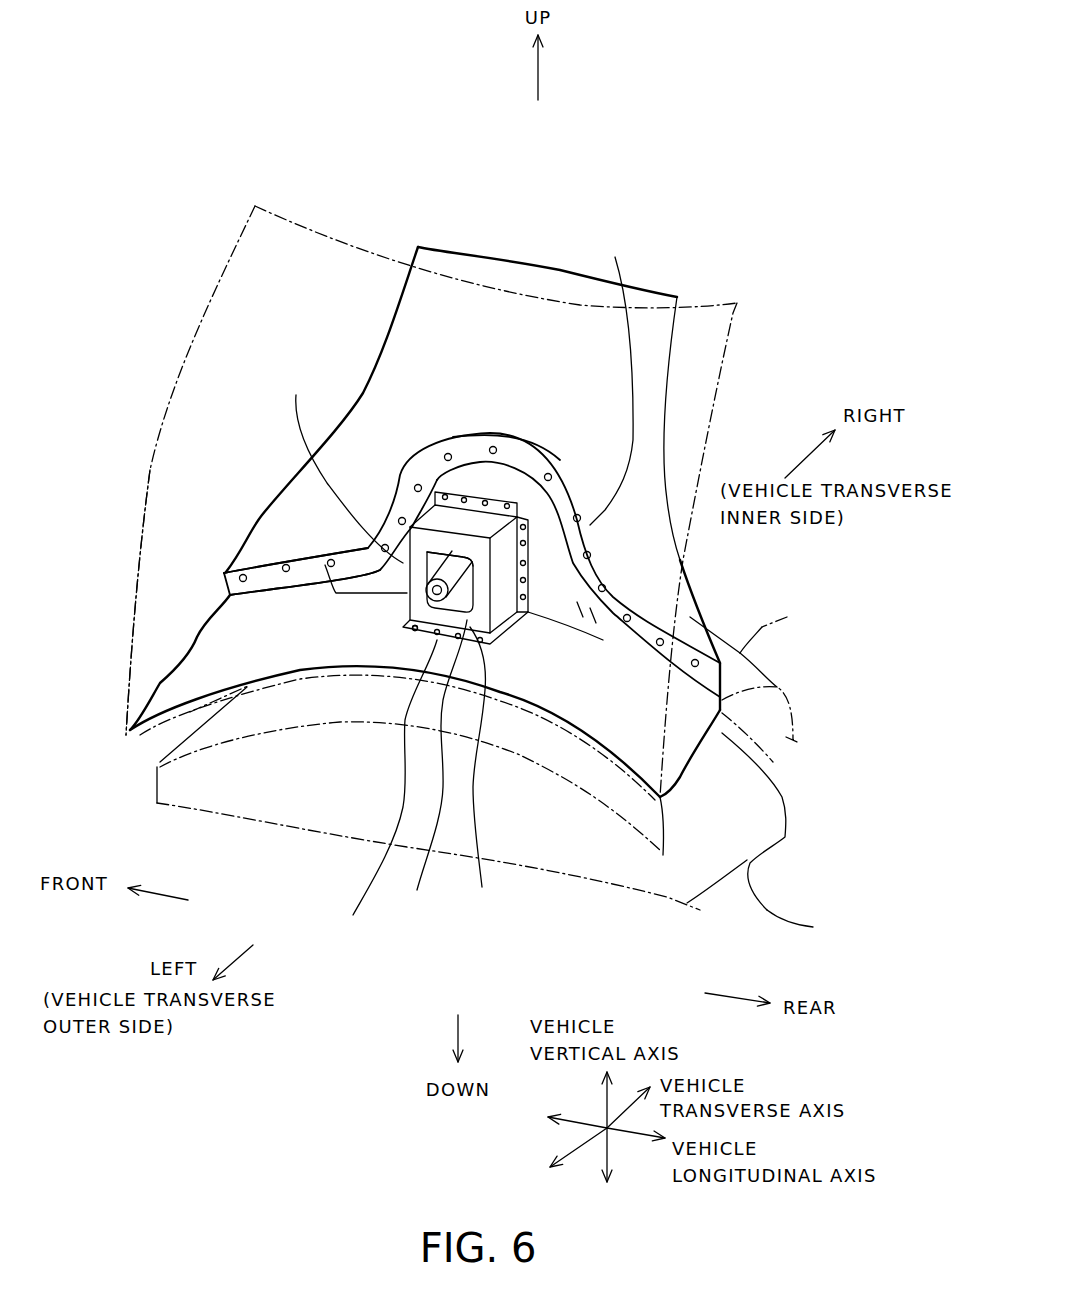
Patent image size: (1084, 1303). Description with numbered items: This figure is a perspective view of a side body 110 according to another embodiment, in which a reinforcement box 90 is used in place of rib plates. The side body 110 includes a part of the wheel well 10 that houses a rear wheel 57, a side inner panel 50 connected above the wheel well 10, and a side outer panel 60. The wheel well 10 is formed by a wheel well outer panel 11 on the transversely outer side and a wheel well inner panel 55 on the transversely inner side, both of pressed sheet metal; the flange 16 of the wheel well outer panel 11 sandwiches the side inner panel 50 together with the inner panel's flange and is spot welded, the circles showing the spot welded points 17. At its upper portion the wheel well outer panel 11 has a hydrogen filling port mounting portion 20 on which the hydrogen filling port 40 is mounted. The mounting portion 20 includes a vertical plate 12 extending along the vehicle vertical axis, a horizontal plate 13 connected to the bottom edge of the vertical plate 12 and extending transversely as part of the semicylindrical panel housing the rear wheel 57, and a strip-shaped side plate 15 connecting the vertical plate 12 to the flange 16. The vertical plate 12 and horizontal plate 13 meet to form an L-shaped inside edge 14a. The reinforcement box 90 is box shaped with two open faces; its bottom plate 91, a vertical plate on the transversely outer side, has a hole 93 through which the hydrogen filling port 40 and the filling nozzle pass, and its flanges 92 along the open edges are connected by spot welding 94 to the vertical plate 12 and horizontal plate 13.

The side body 110 is at (135, 257).
The side outer panel 60 is at (233, 248).
The side inner panel 50 is at (648, 291).
The L-shaped inside edge 14a is at (612, 376).
The hydrogen filling port mounting portion 20 is at (548, 508).
The strip-shaped side plate 15 is at (507, 477).
The spot welded points 17 is at (287, 570).
The flange 16 is at (325, 565).
The vertical plate 12 is at (296, 395).
The reinforcement box 90 is at (407, 605).
The hole 93 is at (442, 563).
The hydrogen filling port 40 is at (430, 548).
The spot welding 94 is at (412, 622).
The horizontal plate 13 is at (382, 790).
The flanges 92 is at (433, 768).
The bottom plate 91 is at (486, 772).
The wheel well outer panel 11 is at (637, 733).
The wheel well 10 is at (680, 730).
The wheel well inner panel 55 is at (787, 617).
The rear wheel 57 is at (766, 901).